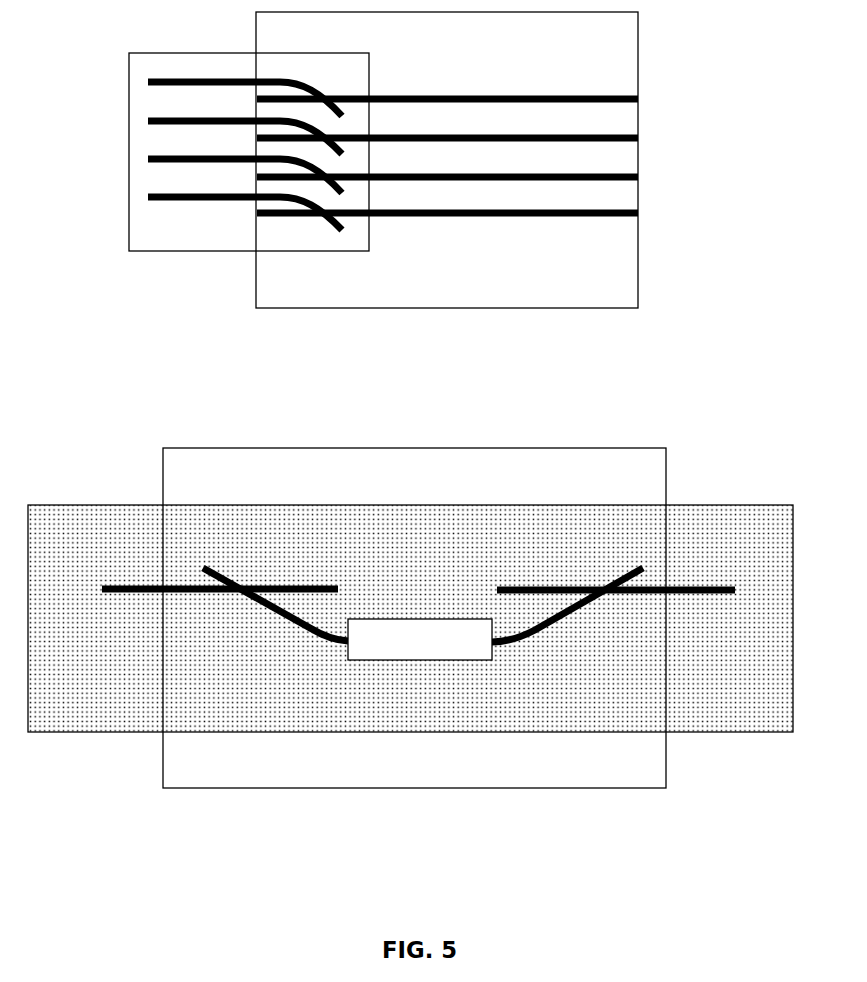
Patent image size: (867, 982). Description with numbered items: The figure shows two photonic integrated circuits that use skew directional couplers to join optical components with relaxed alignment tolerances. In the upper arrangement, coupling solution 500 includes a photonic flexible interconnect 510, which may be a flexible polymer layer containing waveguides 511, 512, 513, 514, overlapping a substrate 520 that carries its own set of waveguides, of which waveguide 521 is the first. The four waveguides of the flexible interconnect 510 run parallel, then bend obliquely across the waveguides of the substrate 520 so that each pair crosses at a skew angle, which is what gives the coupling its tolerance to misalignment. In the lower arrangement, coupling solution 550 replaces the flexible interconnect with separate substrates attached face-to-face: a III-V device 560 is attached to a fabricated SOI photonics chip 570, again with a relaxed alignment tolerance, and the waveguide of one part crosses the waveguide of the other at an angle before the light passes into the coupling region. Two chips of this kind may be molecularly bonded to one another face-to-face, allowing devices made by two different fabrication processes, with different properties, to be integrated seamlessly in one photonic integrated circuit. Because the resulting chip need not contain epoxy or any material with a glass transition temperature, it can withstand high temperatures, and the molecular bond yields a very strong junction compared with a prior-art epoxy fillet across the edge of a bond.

The coupling solution 500 is at (732, 98).
The photonic flexible interconnect 510 is at (194, 245).
The waveguide 511 is at (149, 82).
The waveguide 512 is at (245, 137).
The waveguide 513 is at (245, 176).
The waveguide 514 is at (149, 195).
The substrate 520 is at (611, 301).
The waveguide 521 is at (447, 125).
The coupling solution 550 is at (759, 465).
The III-V device 560 is at (536, 486).
The fabricated SOI photonics chip 570 is at (742, 546).